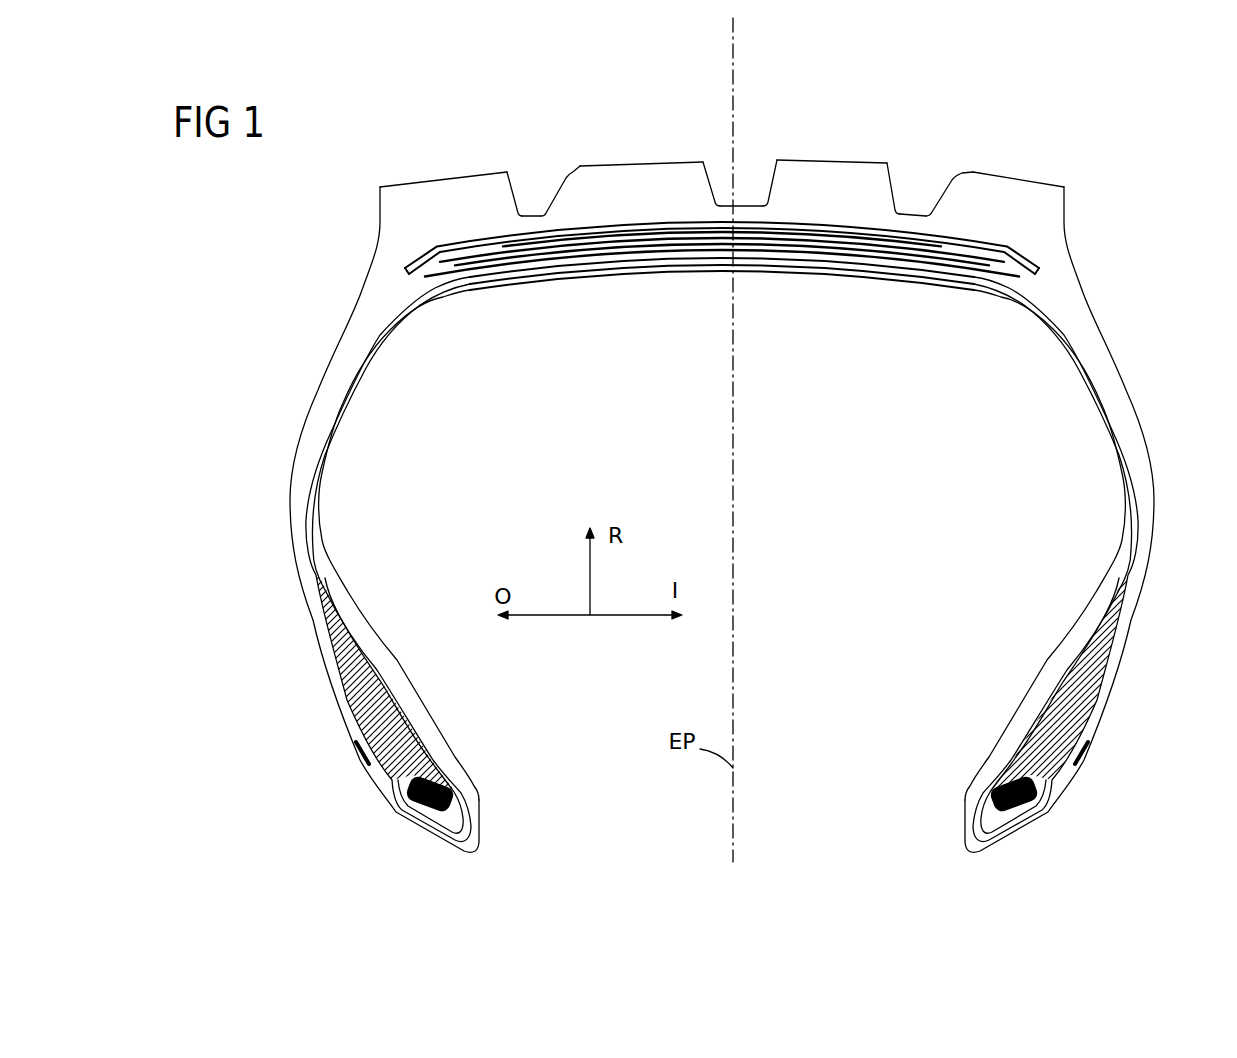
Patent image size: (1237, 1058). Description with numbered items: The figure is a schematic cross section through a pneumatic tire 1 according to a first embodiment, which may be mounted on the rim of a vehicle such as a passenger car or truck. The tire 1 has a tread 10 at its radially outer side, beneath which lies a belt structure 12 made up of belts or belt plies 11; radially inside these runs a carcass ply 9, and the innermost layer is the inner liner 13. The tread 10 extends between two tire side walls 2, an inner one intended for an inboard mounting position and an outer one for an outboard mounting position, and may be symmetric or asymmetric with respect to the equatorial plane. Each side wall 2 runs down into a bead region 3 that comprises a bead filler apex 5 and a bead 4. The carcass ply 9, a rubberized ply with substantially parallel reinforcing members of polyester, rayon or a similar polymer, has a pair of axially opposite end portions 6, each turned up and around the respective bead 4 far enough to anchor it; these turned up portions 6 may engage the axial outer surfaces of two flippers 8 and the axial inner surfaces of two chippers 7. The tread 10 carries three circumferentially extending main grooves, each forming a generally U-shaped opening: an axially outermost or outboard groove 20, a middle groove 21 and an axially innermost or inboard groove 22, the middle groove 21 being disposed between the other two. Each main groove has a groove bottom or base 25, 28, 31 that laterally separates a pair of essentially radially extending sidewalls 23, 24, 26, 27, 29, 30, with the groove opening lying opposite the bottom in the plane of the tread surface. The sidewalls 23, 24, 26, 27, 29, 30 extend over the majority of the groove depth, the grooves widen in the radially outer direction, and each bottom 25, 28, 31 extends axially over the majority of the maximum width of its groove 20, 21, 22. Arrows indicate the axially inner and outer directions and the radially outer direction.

The pneumatic tire 1 is at (328, 243).
The tire side wall 2 is at (318, 385).
The bead region 3 is at (283, 690).
The bead 4 is at (456, 792).
The bead filler apex 5 is at (385, 703).
The end portion of the carcass ply 6 is at (357, 727).
The chipper 7 is at (358, 755).
The flipper 8 is at (379, 795).
The carcass ply 9 is at (445, 300).
The tread 10 is at (1050, 212).
The belt ply 11 is at (841, 253).
The belt structure 12 is at (620, 222).
The inner liner 13 is at (408, 333).
The outermost groove 20 is at (536, 152).
The middle groove 21 is at (742, 120).
The innermost groove 22 is at (925, 143).
The sidewall 23 is at (520, 183).
The sidewall 24 is at (570, 178).
The groove bottom 25 is at (538, 213).
The sidewall 26 is at (712, 182).
The sidewall 27 is at (771, 180).
The groove bottom 28 is at (737, 205).
The sidewall 29 is at (900, 192).
The sidewall 30 is at (948, 192).
The groove bottom 31 is at (929, 208).